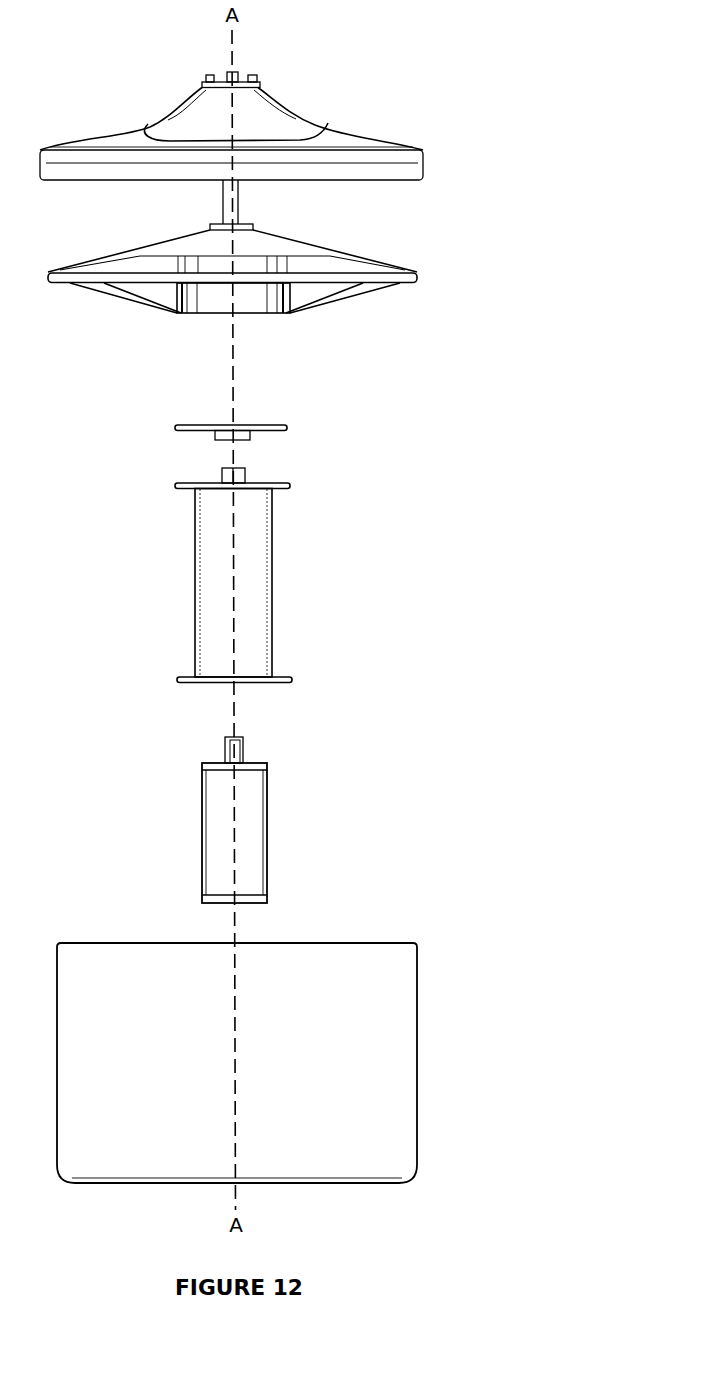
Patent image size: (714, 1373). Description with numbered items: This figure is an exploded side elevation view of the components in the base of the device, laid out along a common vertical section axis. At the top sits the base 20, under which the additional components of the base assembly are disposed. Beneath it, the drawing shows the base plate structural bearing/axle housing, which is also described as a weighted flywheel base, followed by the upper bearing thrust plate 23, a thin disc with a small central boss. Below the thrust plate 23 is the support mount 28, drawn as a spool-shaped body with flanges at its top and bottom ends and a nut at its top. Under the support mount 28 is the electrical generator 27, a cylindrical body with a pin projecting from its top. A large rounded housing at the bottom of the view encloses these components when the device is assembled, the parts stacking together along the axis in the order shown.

The base 20 is at (385, 157).
The upper bearing thrust plate 23 is at (305, 427).
The support mount 28 is at (300, 572).
The electrical generator 27 is at (302, 836).